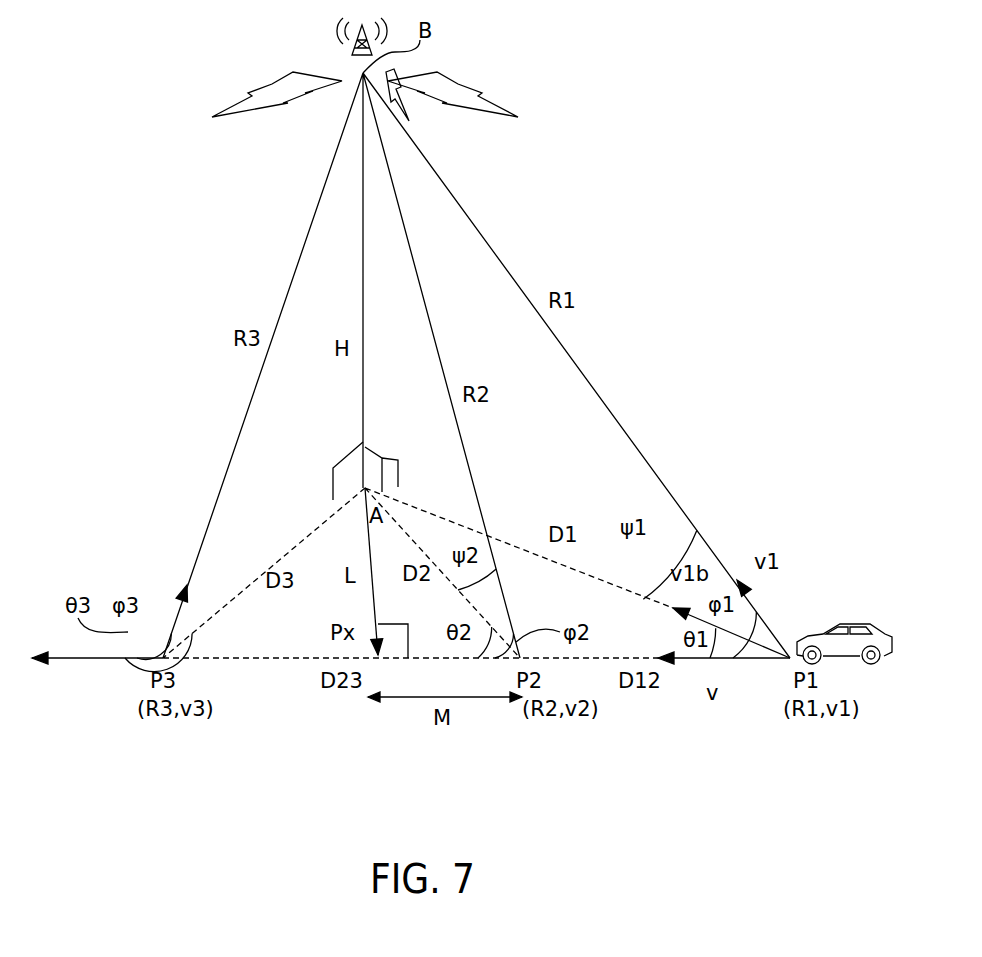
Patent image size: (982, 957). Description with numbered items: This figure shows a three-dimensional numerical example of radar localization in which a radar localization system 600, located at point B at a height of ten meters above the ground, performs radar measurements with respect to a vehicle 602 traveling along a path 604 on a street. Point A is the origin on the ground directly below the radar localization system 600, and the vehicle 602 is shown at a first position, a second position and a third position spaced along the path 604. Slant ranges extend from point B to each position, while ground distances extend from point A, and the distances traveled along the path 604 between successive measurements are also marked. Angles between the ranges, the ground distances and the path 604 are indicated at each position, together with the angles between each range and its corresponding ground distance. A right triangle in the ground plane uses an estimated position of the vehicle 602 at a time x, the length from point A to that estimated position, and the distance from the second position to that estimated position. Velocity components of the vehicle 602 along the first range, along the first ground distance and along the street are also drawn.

The radar localization system 600 is at (352, 53).
The vehicle 602 is at (812, 632).
The path 604 is at (95, 660).